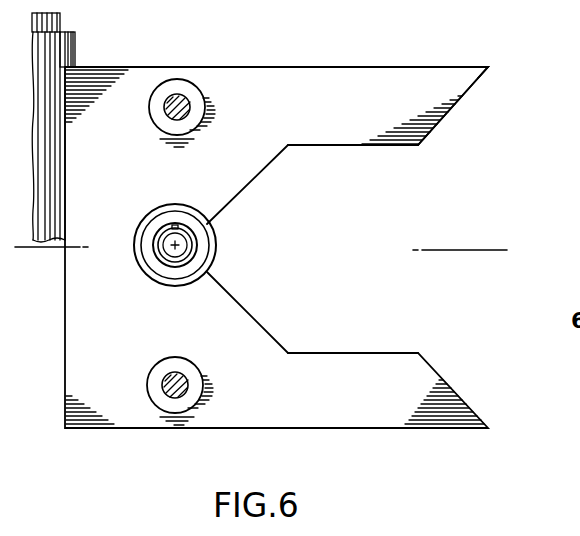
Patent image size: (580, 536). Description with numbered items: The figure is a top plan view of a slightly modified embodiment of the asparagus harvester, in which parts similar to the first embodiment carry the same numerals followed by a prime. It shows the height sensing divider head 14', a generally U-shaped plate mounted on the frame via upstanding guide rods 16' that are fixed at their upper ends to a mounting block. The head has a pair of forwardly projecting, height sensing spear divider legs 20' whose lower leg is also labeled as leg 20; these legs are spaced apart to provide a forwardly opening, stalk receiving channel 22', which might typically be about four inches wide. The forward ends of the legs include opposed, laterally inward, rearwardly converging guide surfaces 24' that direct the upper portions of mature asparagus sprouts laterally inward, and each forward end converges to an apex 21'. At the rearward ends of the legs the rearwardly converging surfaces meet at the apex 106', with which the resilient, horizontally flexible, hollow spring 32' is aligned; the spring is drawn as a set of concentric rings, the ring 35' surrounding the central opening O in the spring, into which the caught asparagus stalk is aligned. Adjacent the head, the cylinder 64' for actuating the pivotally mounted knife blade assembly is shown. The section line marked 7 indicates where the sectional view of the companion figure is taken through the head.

The height sensing divider head 14' is at (276, 221).
The upstanding guide rods 16' is at (200, 245).
The spear divider legs 20 is at (360, 445).
The spear divider legs 20' is at (360, 51).
The apex 21' is at (506, 55).
The stalk receiving channel 22' is at (416, 249).
The guide surfaces 24' is at (460, 106).
The resilient horizontally flexible spring 32' is at (153, 217).
The bearing ring 35' is at (140, 261).
The cylinder 64' is at (78, 127).
The apex of rearwardly converging surfaces 106' is at (169, 217).
The opening O is at (172, 243).
The section line 7- 7 is at (23, 225).